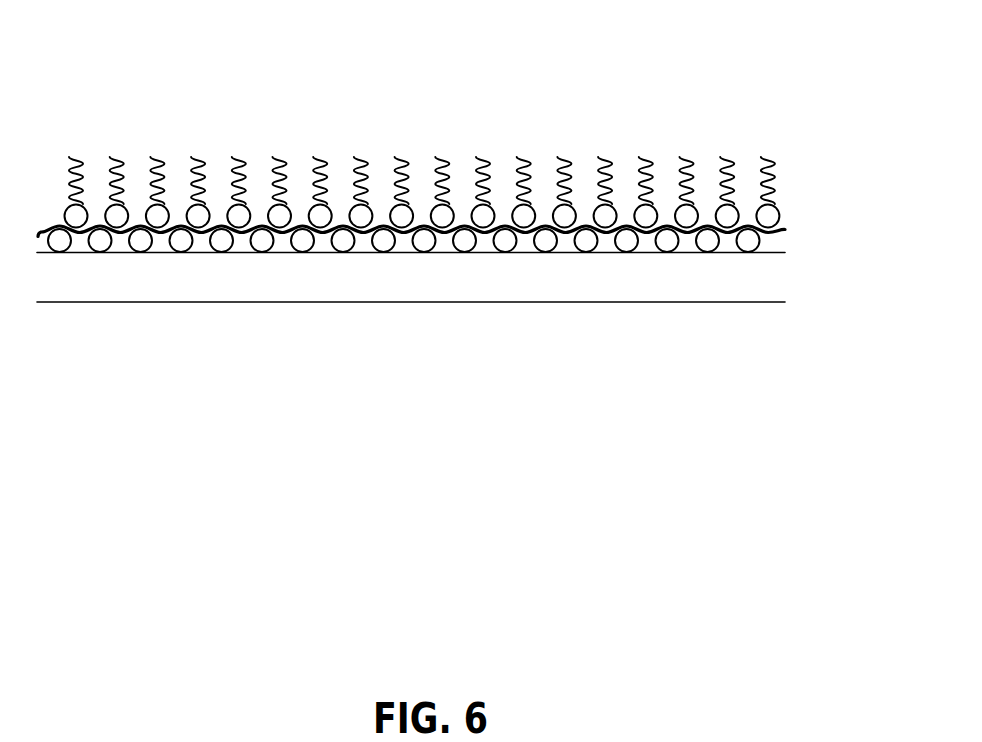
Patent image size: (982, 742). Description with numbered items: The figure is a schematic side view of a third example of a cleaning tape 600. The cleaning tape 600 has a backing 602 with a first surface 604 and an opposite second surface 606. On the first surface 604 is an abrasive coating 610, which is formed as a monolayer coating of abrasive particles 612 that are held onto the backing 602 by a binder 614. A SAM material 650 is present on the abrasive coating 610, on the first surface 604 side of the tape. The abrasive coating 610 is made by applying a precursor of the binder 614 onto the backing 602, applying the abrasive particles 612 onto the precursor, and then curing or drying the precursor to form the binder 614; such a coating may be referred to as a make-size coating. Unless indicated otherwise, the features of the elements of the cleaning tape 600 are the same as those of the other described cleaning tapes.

The cleaning tape 600 is at (568, 102).
The backing 602 is at (168, 308).
The first surface 604 is at (785, 252).
The second surface 606 is at (357, 303).
The abrasive coating 610 is at (625, 223).
The abrasive particles 612 is at (478, 253).
The binder 614 is at (425, 222).
The SAM material 650 is at (195, 152).